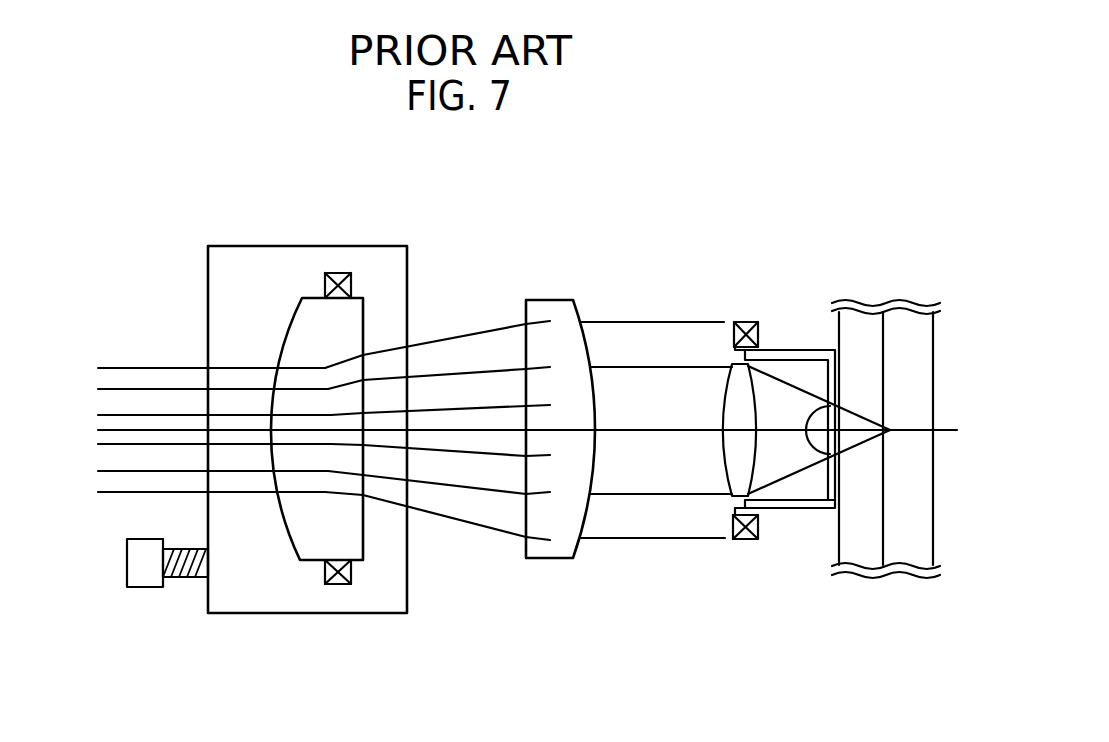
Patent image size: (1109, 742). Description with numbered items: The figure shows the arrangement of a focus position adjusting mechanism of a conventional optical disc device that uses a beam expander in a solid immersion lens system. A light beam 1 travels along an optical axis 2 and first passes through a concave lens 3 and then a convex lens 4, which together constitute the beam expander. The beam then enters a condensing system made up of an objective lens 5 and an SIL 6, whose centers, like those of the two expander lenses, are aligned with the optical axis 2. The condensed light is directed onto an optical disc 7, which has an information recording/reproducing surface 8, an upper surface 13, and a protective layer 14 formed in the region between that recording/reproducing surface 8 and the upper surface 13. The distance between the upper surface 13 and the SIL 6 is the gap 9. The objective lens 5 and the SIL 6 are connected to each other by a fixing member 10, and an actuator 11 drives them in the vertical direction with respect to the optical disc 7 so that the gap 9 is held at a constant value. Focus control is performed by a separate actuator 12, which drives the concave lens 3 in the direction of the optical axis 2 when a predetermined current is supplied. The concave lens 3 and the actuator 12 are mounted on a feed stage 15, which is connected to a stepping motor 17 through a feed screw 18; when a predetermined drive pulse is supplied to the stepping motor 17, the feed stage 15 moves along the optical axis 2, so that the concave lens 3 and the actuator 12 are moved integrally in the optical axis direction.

The light beam 1 is at (147, 417).
The optical axis 2 is at (108, 428).
The concave lens 3 is at (367, 310).
The convex lens 4 is at (548, 299).
The objective lens 5 is at (735, 423).
The SIL 6 is at (824, 420).
The optical disc 7 is at (934, 327).
The information recording/reproducing surface 8 is at (889, 327).
The gap 9 is at (835, 509).
The fixing member 10 is at (789, 350).
The actuator 11 is at (746, 322).
The actuator 12 is at (337, 273).
The upper surface 13 is at (838, 322).
The protective layer 14 is at (864, 328).
The feed stage 15 is at (280, 246).
The stepping motor 17 is at (127, 568).
The feed screw 18 is at (188, 578).